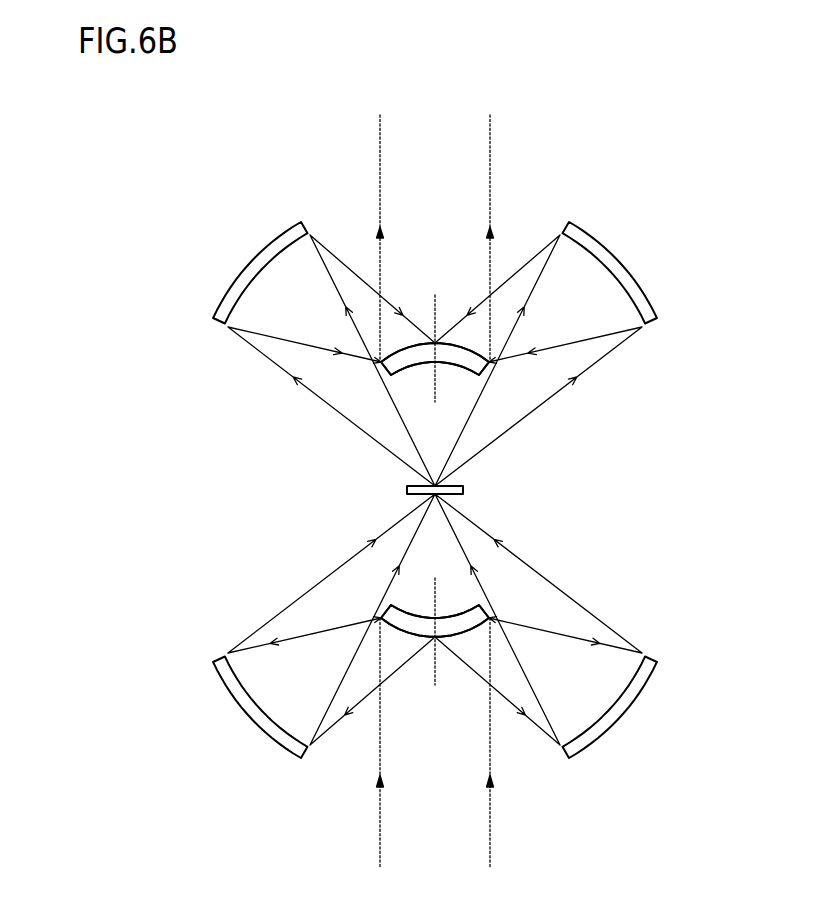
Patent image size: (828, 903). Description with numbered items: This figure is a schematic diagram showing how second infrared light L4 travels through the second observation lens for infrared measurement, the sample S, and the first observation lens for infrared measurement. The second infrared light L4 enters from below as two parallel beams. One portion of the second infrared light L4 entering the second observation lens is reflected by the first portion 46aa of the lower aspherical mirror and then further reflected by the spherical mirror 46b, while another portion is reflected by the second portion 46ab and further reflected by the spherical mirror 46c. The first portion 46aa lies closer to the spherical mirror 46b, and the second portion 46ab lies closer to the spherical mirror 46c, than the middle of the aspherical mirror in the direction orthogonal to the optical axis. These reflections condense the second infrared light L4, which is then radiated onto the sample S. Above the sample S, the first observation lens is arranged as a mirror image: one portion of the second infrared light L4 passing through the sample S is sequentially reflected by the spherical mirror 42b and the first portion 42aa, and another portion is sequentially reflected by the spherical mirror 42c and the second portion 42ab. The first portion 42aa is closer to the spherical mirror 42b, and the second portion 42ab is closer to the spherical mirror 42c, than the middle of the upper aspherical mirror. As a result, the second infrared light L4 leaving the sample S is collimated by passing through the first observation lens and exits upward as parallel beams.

The spherical mirror 42b is at (622, 280).
The spherical mirror 42c is at (250, 280).
The first portion 42aa is at (483, 373).
The second portion 42ab is at (387, 373).
The spherical mirror 46b is at (622, 700).
The spherical mirror 46c is at (250, 700).
The first portion 46aa is at (483, 607).
The second portion 46ab is at (387, 607).
The sample S is at (407, 486).
The second infrared light L4 is at (435, 491).